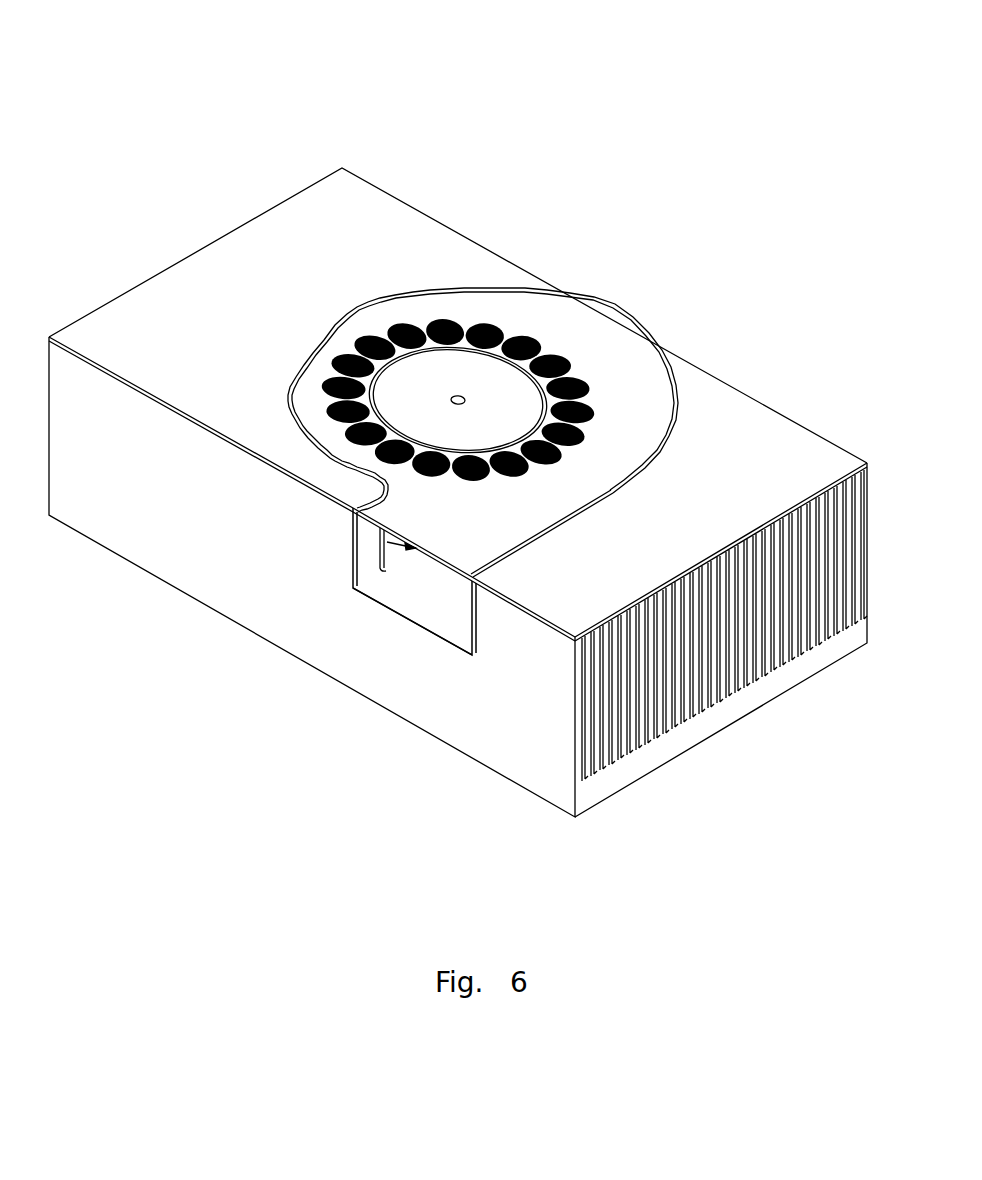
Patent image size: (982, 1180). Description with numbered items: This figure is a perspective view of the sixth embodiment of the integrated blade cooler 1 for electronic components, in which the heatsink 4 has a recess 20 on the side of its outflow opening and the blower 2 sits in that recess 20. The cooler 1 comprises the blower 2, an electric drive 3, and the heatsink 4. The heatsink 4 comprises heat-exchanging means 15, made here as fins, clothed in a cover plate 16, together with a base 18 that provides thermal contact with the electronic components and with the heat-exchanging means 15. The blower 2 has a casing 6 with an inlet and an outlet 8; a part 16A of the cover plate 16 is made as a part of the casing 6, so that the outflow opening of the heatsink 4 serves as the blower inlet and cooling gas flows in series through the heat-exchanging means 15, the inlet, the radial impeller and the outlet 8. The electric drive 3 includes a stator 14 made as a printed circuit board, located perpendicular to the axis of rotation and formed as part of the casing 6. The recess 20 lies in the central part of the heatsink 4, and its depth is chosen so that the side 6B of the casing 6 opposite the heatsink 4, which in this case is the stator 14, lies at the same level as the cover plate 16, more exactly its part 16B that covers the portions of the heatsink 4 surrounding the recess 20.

The integrated blade cooler 1 is at (243, 128).
The blower 2 is at (440, 595).
The electric drive 3 is at (610, 313).
The heatsink 4 is at (217, 580).
The casing 6 is at (201, 424).
The side of the casing 6B is at (635, 382).
The outlet 8 is at (418, 583).
The stator 14 is at (510, 305).
The heat-exchanging means 15 is at (748, 630).
The cover plate 16 is at (412, 544).
The part of the cover plate 16A is at (392, 585).
The part of the cover plate 16B is at (718, 460).
The base 18 is at (675, 742).
The recess 20 is at (442, 640).